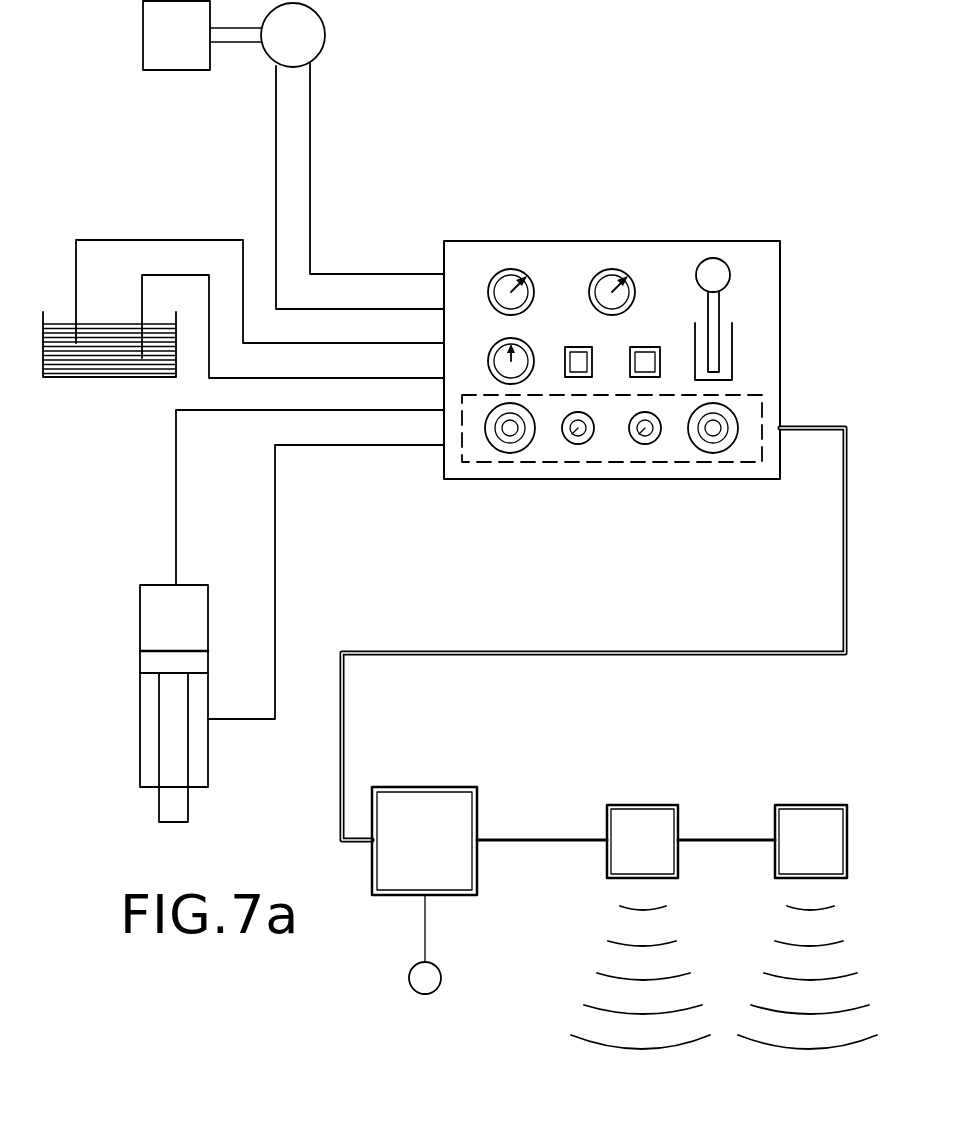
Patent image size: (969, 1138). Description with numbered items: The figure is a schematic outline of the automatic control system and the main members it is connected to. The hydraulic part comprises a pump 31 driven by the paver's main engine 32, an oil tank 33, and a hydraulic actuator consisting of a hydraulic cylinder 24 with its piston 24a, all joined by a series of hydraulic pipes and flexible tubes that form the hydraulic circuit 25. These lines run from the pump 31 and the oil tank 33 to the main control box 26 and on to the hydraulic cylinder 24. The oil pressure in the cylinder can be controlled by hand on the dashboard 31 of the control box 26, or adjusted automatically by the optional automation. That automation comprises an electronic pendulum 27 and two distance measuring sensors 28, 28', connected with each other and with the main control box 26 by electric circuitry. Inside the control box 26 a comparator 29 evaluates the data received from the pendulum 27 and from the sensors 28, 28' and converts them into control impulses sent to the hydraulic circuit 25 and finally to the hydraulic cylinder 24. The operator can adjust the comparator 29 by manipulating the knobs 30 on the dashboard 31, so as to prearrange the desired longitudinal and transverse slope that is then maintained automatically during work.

The hydraulic cylinder 24 is at (164, 703).
The piston 24a is at (183, 660).
The hydraulic circuit 25 is at (220, 235).
The main control box 26 is at (612, 358).
The electronic pendulum 27 is at (420, 828).
The distance measuring sensor 28 is at (807, 892).
The distance measuring sensor 28' is at (673, 892).
The comparator 29 is at (543, 445).
The knobs 30 is at (583, 438).
The dashboard / pump 31 is at (326, 33).
The main engine 32 is at (172, 70).
The oil tank 33 is at (103, 384).